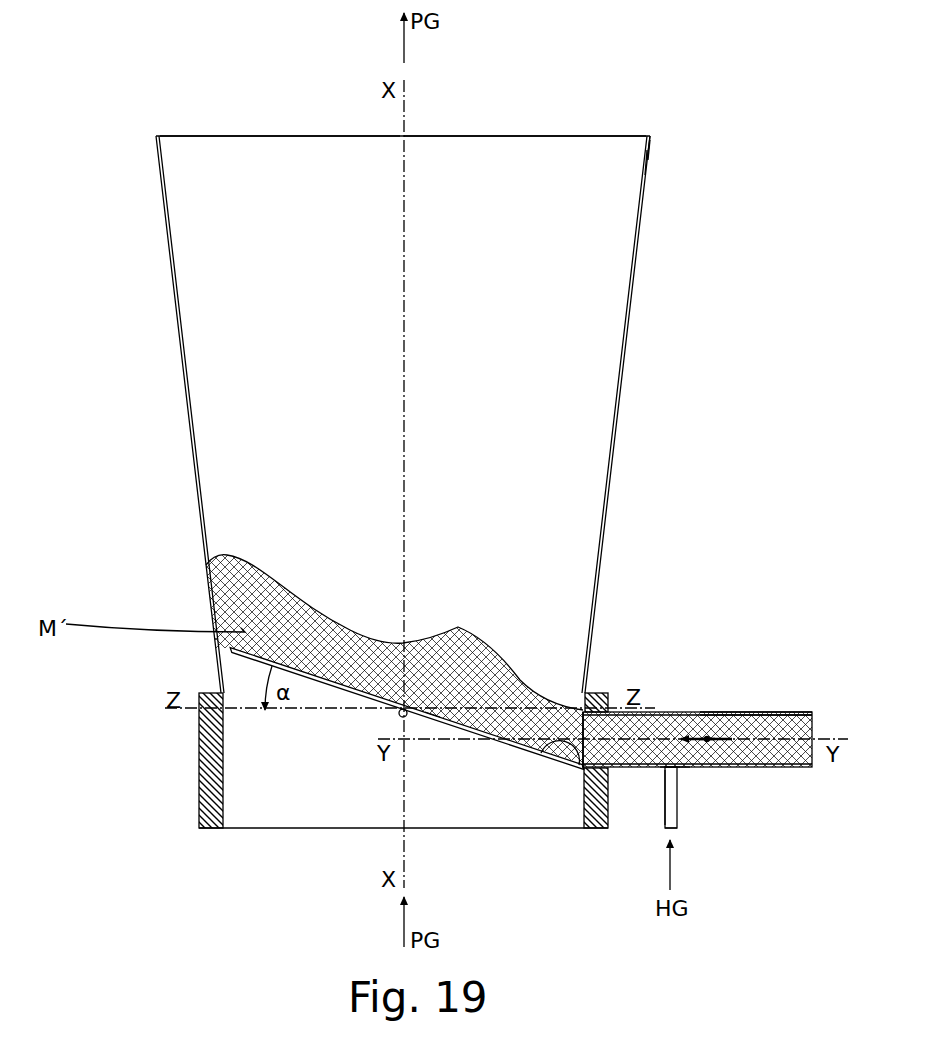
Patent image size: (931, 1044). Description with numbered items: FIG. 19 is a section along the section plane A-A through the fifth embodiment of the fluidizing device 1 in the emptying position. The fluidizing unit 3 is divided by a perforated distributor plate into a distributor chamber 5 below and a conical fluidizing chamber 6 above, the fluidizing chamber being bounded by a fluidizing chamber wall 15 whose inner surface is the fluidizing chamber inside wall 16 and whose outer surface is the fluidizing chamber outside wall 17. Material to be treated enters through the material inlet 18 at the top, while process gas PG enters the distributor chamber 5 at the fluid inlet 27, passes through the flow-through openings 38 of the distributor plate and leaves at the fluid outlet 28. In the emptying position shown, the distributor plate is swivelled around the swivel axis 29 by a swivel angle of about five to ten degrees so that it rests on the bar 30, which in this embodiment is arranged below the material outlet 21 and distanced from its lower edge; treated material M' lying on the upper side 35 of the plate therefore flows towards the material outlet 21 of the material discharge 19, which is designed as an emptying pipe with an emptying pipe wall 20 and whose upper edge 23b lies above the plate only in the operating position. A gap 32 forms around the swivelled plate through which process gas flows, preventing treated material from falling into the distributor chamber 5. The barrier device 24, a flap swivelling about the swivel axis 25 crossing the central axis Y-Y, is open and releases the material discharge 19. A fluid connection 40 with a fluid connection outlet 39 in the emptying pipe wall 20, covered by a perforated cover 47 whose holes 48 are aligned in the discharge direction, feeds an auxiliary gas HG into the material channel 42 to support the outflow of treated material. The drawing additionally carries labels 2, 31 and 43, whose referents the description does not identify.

The fluidizing device 1 is at (768, 107).
The filling installation 2 is at (77, 363).
The fluidizing unit 3 is at (649, 530).
The distributor chamber 5 is at (196, 762).
The fluidizing chamber 6 is at (640, 278).
The fluidizing chamber wall 15 is at (649, 177).
The fluidizing chamber inside wall 16 is at (644, 172).
The fluidizing chamber outside wall 17 is at (648, 155).
The material inlet 18 is at (283, 133).
The material discharge 19 is at (784, 710).
The emptying pipe wall 20 is at (800, 712).
The material outlet 21 is at (591, 727).
The upper edge 23b is at (593, 691).
The barrier device 24 is at (707, 738).
The swivel axis 25 is at (710, 744).
The fluid inlet 27 is at (477, 831).
The fluid outlet 28 is at (507, 133).
The swivel axis 29 is at (400, 716).
The bar 30 is at (579, 773).
The plate end portion 31 is at (552, 758).
The gap 32 is at (223, 656).
The upper side 35 is at (302, 668).
The flow-through openings 38 is at (433, 715).
The fluid connection outlet 39 is at (675, 770).
The fluid connection 40 is at (663, 791).
The material channel 42 is at (804, 730).
The gas inlet 43 is at (676, 829).
The perforated cover 47 is at (673, 767).
The holes 48 is at (674, 770).